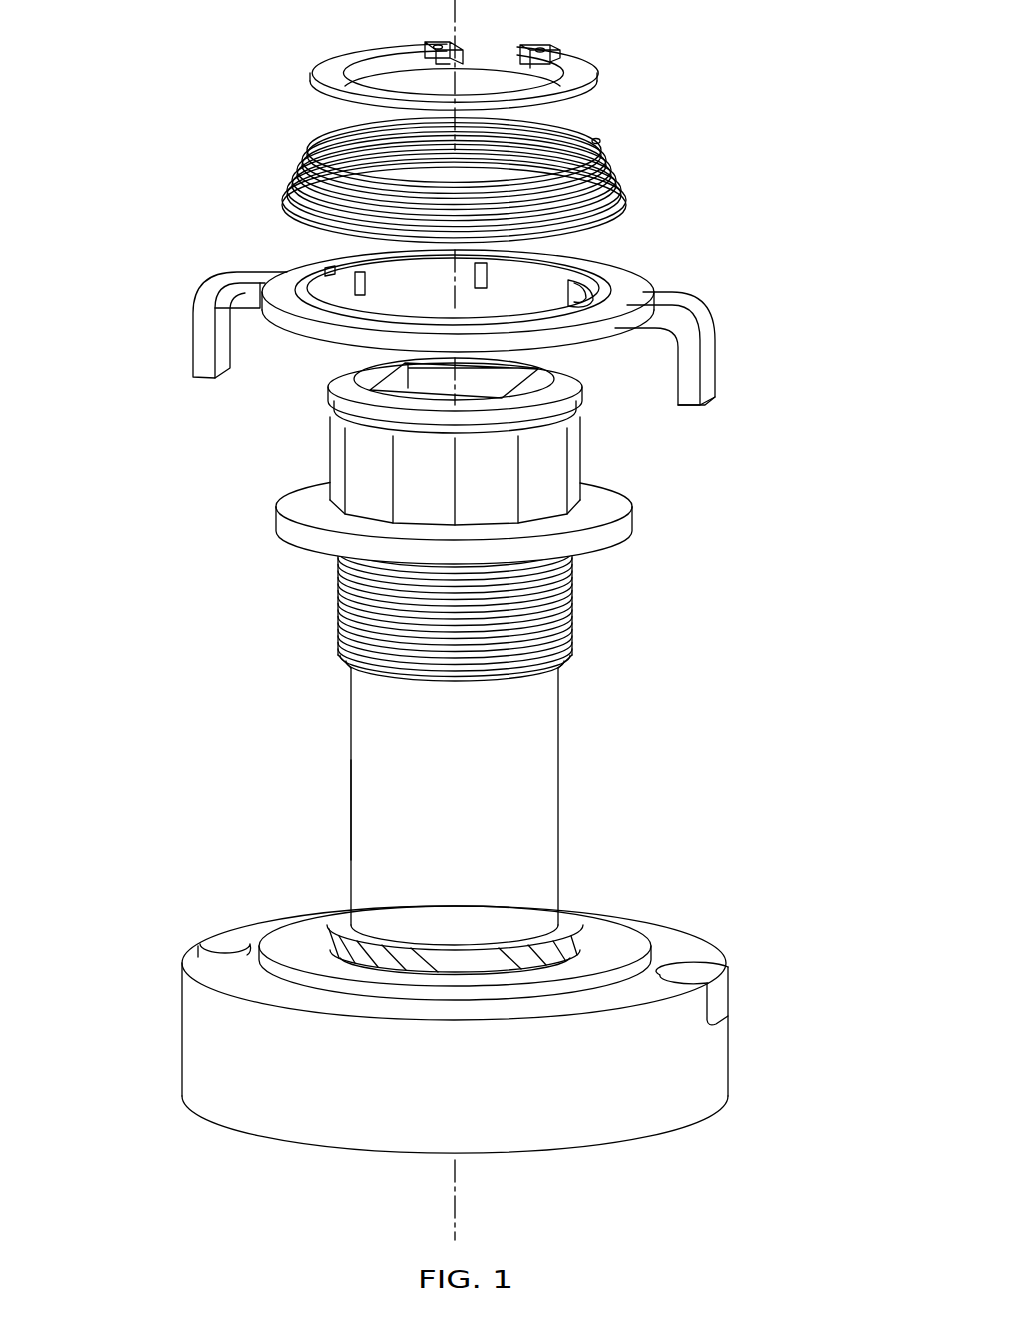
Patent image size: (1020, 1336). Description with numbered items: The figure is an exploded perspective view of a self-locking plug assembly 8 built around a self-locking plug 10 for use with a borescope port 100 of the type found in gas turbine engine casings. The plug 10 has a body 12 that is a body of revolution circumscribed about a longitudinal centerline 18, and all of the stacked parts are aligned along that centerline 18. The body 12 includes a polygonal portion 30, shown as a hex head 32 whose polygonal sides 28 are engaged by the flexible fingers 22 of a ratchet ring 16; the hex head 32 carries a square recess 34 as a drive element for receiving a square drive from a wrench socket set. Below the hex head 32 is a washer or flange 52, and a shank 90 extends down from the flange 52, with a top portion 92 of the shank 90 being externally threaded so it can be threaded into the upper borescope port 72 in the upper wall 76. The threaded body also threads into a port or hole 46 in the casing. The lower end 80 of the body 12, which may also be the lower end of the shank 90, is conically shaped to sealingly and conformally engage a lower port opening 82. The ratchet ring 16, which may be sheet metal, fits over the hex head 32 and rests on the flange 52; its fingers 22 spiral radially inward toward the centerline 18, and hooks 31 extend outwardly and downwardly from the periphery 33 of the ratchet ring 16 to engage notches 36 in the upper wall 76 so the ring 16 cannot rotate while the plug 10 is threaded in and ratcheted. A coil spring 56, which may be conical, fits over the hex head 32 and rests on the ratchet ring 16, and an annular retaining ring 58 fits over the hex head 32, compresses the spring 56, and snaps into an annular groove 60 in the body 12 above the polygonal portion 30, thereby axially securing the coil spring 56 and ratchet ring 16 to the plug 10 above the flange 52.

The self-locking plug assembly 8 is at (152, 1172).
The self-locking plug 10 is at (559, 745).
The body 12 is at (348, 660).
The ratchet ring 16 is at (610, 268).
The longitudinal centerline 18 is at (456, 1180).
The flexible fingers 22 is at (560, 280).
The polygonal sides 28 is at (553, 483).
The polygonal portion 30 is at (328, 455).
The hooks 31 is at (672, 290).
The hex head 32 is at (584, 438).
The periphery 33 is at (584, 327).
The square recess 34 is at (402, 378).
The notches 36 is at (717, 995).
The port or hole 46 is at (504, 945).
The washer or flange 52 is at (633, 520).
The coil spring 56 is at (603, 153).
The annular retaining ring 58 is at (598, 83).
The annular groove 60 is at (580, 413).
The upper borescope port 72 is at (618, 930).
The upper wall 76 is at (728, 1068).
The lower end 80 is at (372, 946).
The lower port opening 82 is at (520, 950).
The shank 90 is at (370, 810).
The top portion 92 is at (574, 610).
The borescope port 100 is at (683, 930).